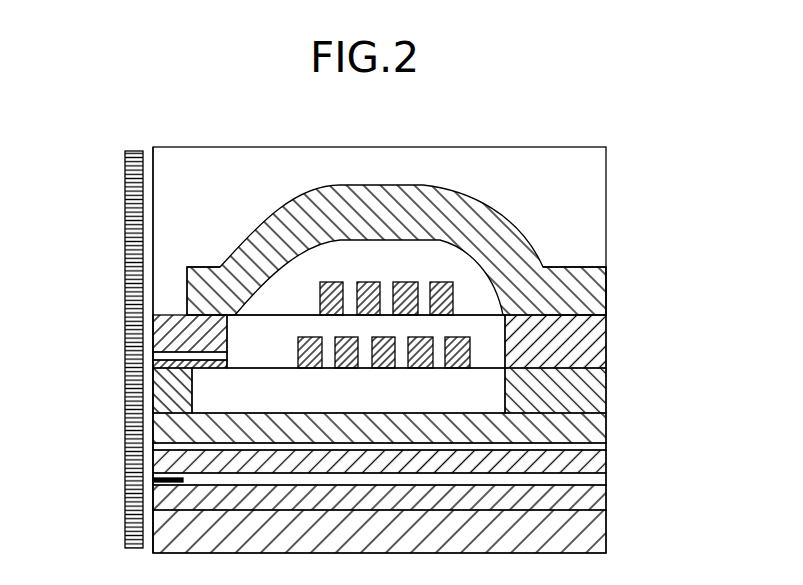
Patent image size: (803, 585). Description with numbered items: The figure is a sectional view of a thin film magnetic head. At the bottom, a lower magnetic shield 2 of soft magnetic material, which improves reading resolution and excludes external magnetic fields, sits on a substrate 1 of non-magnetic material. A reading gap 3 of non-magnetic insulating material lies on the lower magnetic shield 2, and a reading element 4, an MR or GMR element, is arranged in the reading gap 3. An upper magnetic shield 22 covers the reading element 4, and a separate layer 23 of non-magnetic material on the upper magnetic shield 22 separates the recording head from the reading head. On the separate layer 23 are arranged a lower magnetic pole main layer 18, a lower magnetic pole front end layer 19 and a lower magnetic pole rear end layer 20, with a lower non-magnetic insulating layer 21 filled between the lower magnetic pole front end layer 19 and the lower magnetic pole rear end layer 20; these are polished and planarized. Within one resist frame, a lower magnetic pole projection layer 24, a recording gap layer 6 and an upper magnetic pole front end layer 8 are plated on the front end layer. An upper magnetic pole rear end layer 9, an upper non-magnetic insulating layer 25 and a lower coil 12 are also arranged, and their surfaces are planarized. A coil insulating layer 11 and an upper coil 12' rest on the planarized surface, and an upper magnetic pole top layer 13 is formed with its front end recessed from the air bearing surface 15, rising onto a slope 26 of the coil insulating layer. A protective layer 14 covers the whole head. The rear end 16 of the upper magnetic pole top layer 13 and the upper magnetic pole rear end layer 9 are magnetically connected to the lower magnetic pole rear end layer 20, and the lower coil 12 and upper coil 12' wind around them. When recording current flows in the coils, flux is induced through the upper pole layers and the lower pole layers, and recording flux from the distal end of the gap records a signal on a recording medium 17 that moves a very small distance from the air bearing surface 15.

The substrate 1 is at (582, 528).
The lower magnetic shield 2 is at (585, 497).
The reading gap 3 is at (582, 480).
The reading element 4 is at (153, 480).
The recording gap layer 6 is at (173, 357).
The upper magnetic pole front end layer 8 is at (178, 338).
The upper magnetic pole rear end layer 9 is at (580, 340).
The coil insulating layer 11 is at (480, 288).
The lower coil 12 is at (443, 240).
The upper coil 12' is at (420, 204).
The upper magnetic pole top layer 13 is at (518, 250).
The protective layer 14 is at (238, 182).
The air bearing surface 15 is at (153, 237).
The rear end of the upper magnetic pole top layer 16 is at (582, 285).
The recording medium 17 is at (125, 187).
The lower magnetic pole main layer 18 is at (582, 425).
The lower magnetic pole front end layer 19 is at (173, 392).
The lower magnetic pole rear end layer 20 is at (578, 393).
The lower non-magnetic insulating layer 21 is at (245, 392).
The upper magnetic shield 22 is at (582, 460).
The separate layer 23 is at (580, 443).
The lower magnetic pole projection layer 24 is at (163, 367).
The upper non-magnetic insulating layer 25 is at (487, 360).
The slope of the coil insulating layer 26 is at (250, 266).